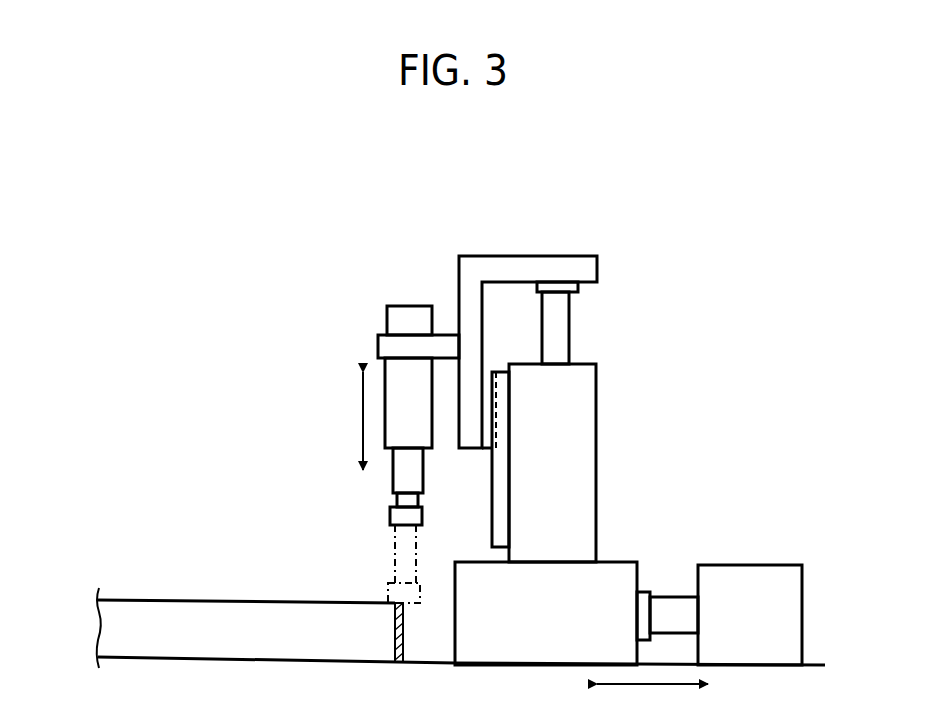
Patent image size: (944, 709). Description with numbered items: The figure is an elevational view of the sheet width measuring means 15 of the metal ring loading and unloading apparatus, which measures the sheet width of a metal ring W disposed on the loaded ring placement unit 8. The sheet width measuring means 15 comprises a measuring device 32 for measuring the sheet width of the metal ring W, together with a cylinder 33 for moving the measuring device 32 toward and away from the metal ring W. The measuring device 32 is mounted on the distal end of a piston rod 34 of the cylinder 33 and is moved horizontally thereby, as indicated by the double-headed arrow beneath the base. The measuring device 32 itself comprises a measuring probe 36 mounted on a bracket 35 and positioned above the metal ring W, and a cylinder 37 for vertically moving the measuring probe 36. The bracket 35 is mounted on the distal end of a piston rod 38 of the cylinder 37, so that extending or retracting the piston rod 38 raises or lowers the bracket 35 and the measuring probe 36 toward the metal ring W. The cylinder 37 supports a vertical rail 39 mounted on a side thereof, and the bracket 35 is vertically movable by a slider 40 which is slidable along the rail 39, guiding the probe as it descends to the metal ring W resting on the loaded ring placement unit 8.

The sheet width measuring means 15 is at (738, 358).
The measuring device 32 is at (357, 268).
The cylinder 33 is at (755, 565).
The piston rod 34 is at (677, 597).
The bracket 35 is at (528, 256).
The measuring probe 36 is at (390, 516).
The cylinder 37 is at (597, 455).
The piston rod 38 is at (570, 323).
The vertical rail 39 is at (492, 518).
The slider 40 is at (497, 450).
The loaded ring placement unit 8 is at (432, 660).
The metal ring W is at (163, 600).